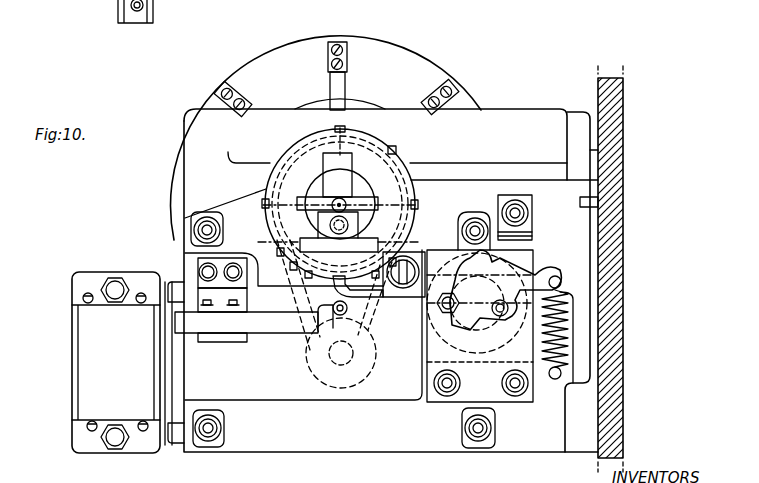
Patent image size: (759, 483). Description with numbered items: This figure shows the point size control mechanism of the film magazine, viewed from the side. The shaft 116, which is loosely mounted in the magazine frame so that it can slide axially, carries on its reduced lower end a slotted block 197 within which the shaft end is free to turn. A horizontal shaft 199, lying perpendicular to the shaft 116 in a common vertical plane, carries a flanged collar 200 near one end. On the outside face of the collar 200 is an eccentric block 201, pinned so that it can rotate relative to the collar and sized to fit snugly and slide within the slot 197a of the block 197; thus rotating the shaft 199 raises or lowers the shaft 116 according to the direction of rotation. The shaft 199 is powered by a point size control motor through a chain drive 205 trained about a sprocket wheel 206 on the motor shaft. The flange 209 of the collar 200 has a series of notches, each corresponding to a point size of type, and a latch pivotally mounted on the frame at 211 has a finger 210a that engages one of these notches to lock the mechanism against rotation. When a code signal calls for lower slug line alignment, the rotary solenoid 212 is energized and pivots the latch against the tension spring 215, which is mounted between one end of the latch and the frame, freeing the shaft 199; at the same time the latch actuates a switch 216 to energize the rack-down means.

The shaft 116 is at (373, 135).
The flange 209 is at (308, 136).
The slotted block 197 is at (420, 197).
The slot 197a is at (400, 236).
The horizontal shaft 199 is at (339, 201).
The flanged collar 200 is at (312, 190).
The eccentric block 201 is at (320, 224).
The finger 210a is at (333, 283).
The pivot 211 is at (405, 290).
The sprocket wheel 206 is at (372, 312).
The chain drive 205 is at (363, 350).
The switch 216 is at (322, 335).
The rotary solenoid 212 is at (530, 262).
The tension spring 215 is at (565, 318).